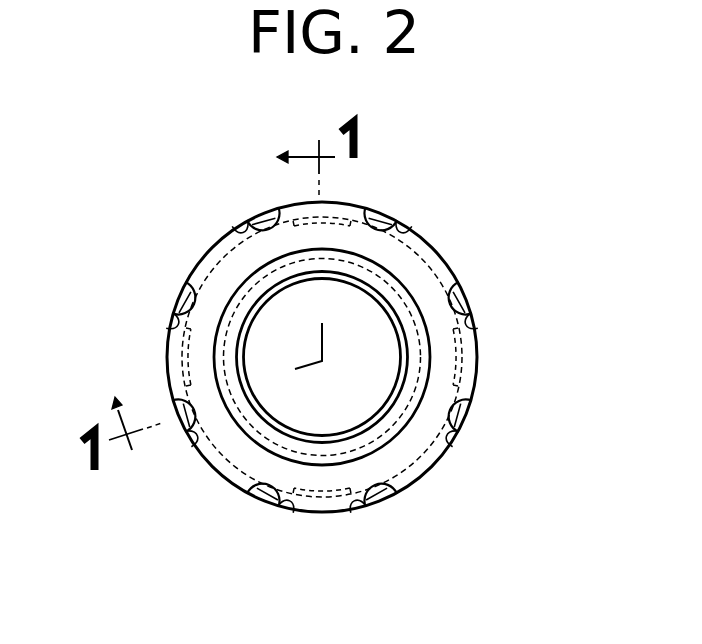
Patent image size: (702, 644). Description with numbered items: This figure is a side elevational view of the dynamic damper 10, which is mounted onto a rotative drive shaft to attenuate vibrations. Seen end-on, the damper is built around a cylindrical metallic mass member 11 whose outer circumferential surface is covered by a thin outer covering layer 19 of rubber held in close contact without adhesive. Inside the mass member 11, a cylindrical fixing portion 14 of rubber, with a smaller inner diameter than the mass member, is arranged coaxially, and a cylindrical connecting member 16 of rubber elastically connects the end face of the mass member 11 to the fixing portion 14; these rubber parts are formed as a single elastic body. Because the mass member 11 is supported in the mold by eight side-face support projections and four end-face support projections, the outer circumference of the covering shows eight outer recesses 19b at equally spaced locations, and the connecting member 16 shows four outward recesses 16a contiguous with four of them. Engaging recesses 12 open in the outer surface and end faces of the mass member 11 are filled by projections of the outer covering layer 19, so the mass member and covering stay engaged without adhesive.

The dynamic damper 10 is at (470, 264).
The metallic mass member 11 is at (425, 242).
The engaging recess 12 is at (338, 199).
The fixing portion 14 is at (392, 440).
The connecting member 16 is at (443, 346).
The outward recess 16a is at (183, 323).
The outer covering layer 19 is at (213, 252).
The outer recess 19b is at (265, 211).